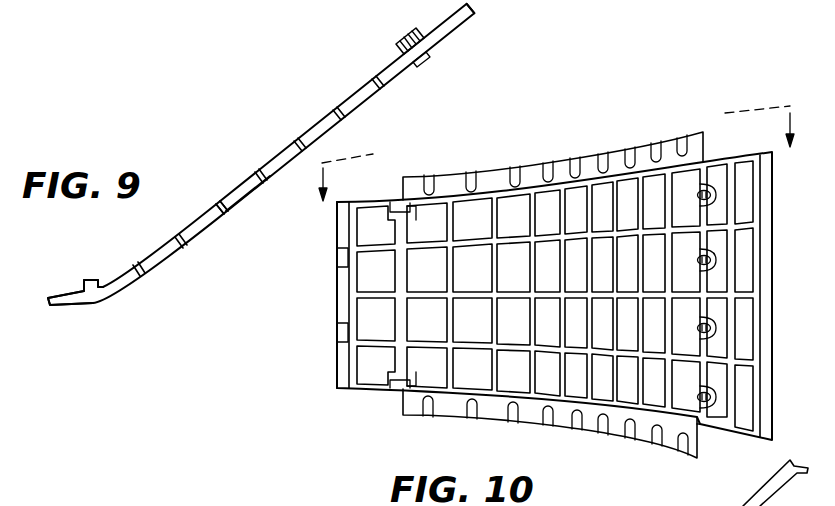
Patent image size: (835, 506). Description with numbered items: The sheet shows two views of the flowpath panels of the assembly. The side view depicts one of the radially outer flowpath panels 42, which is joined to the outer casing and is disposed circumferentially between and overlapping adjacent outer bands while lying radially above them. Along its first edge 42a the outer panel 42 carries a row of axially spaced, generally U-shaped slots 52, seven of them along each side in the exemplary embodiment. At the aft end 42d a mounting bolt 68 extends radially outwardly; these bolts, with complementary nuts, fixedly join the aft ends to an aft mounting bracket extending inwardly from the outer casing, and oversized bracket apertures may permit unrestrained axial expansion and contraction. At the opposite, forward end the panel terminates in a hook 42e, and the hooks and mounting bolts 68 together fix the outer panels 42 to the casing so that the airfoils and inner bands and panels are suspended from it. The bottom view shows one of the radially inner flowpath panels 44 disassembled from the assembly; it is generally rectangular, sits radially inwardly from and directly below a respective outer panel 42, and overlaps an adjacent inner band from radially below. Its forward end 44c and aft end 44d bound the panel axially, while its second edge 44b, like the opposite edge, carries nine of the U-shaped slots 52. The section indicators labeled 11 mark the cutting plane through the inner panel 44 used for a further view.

In FIG. 9, the radially outer flowpath panel 42 is at (348, 100).
In FIG. 9, the first edge of the outer panel 42a is at (247, 203).
In FIG. 9, the aft end of the outer panel 42d is at (300, 0).
In FIG. 9, the hook of the outer panel 42e is at (92, 277).
In FIG. 9, the U-shaped slot 52 is at (220, 213).
In FIG. 10, the U-shaped slot 52 is at (473, 417).
In FIG. 9, the mounting bolt 68 is at (400, 40).
In FIG. 10, the section line 11 is at (557, 164).
In FIG. 10, the radially inner flowpath panel 44 is at (338, 349).
In FIG. 10, the second edge of the inner panel 44b is at (492, 422).
In FIG. 10, the forward end of the inner panel 44c is at (337, 230).
In FIG. 10, the aft end of the inner panel 44d is at (773, 297).